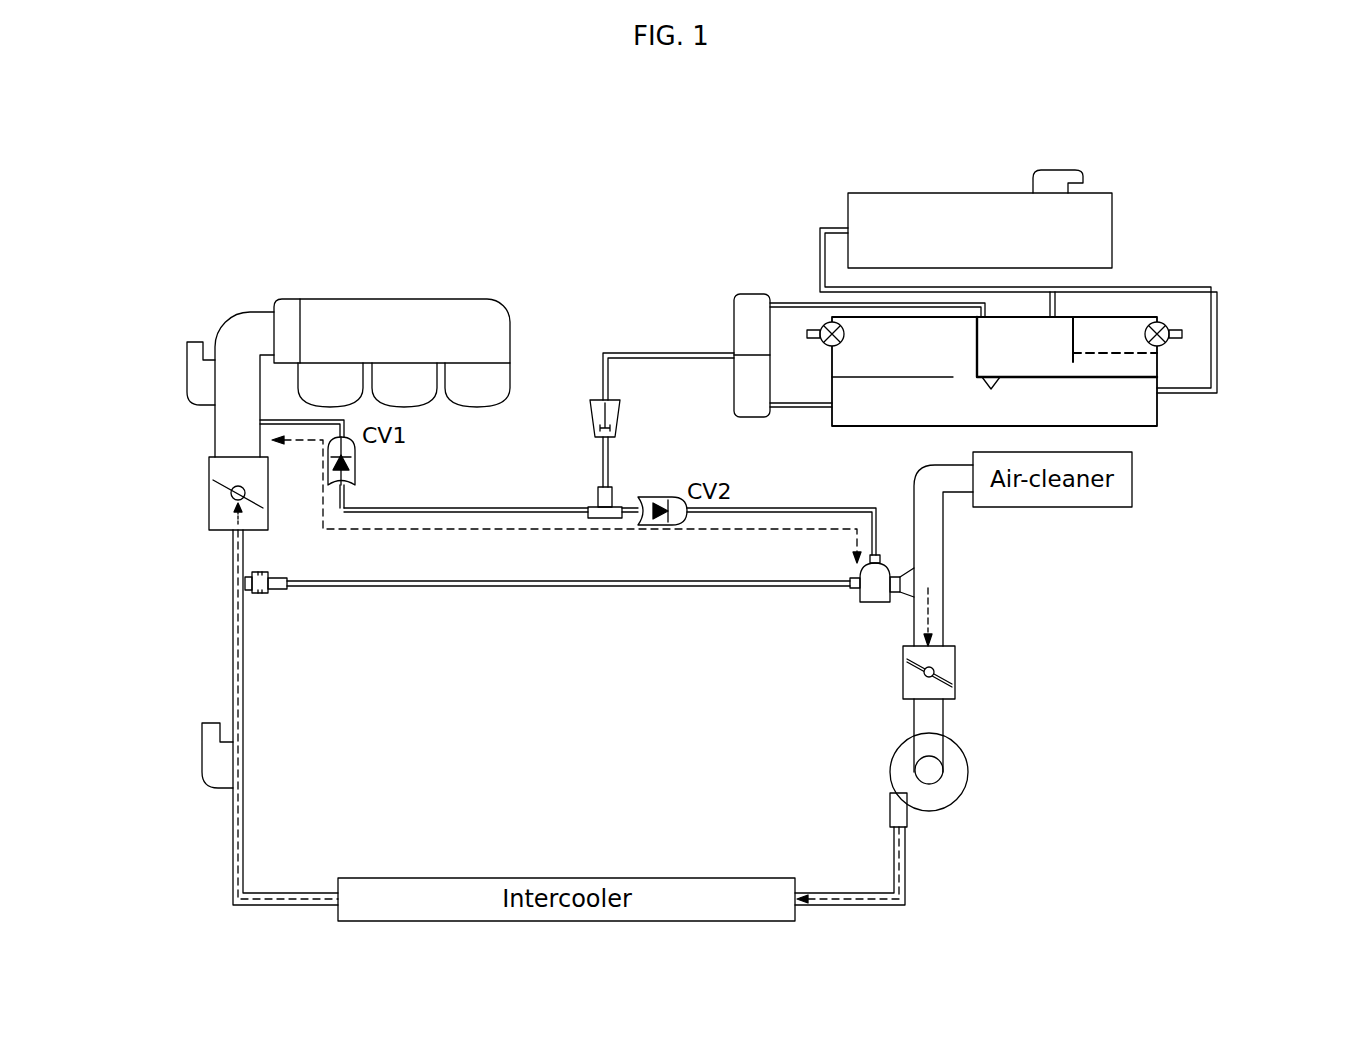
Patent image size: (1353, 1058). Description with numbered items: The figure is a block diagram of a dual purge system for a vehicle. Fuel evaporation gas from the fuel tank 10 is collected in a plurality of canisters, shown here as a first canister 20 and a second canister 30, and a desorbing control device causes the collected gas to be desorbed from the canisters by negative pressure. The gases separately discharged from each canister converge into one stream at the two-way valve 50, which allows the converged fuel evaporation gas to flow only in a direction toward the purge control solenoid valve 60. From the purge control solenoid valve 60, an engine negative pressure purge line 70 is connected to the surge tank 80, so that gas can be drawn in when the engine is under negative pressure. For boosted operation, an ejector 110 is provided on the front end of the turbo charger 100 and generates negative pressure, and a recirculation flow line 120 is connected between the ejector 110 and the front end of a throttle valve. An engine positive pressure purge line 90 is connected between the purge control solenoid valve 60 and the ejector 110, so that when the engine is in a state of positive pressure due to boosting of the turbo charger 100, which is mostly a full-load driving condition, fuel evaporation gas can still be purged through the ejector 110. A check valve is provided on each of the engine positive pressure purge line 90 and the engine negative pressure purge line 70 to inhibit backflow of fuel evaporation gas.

The fuel tank 10 is at (943, 200).
The first canister 20 is at (1148, 418).
The second canister 30 is at (1133, 328).
The two-way valve 50 is at (752, 294).
The purge control solenoid valve (PCSV) 60 is at (597, 398).
The engine negative pressure purge line 70 is at (493, 507).
The surge tank 80 is at (407, 300).
The engine positive pressure purge line 90 is at (785, 507).
The turbo charger 100 is at (962, 773).
The ejector 110 is at (875, 587).
The recirculation flow line 120 is at (668, 588).